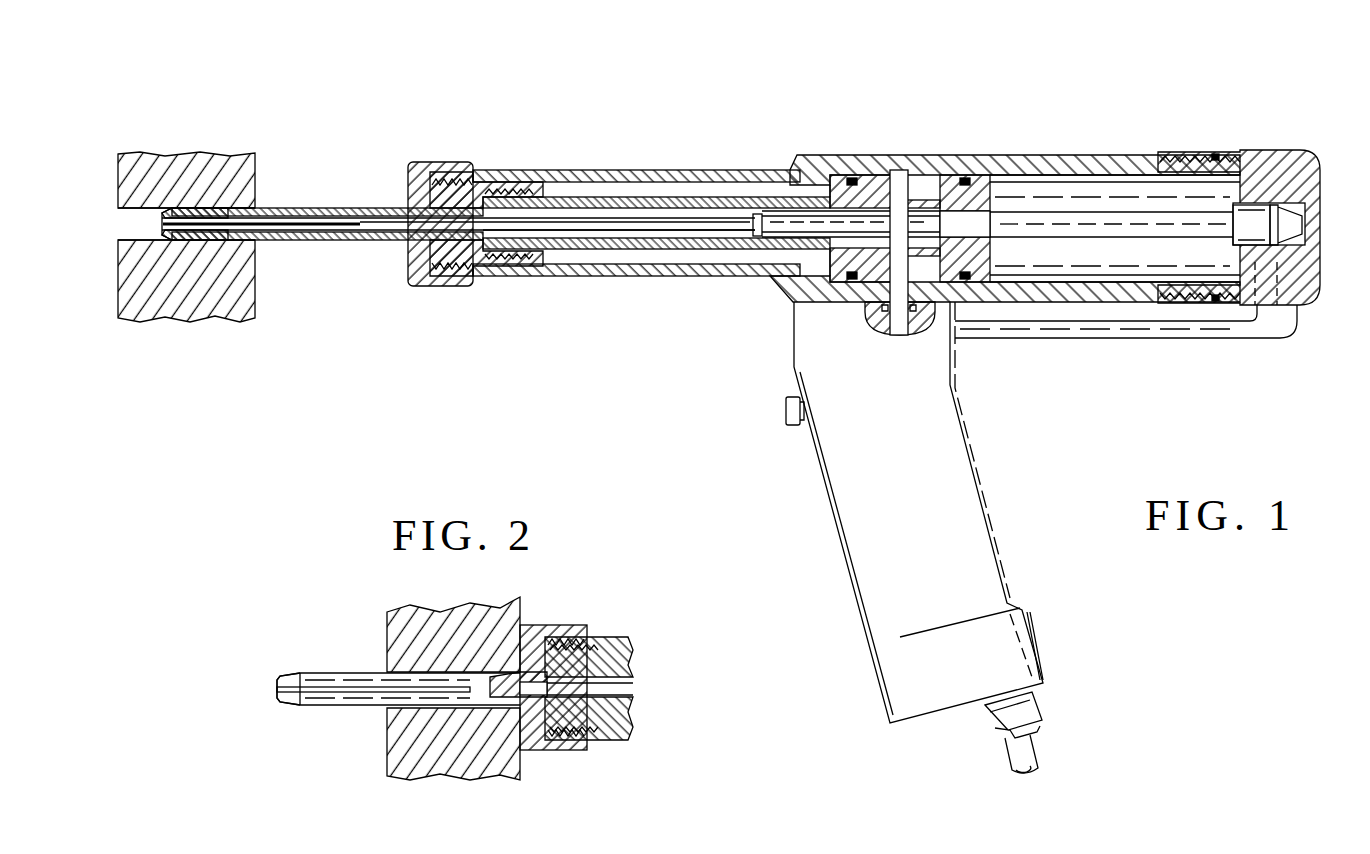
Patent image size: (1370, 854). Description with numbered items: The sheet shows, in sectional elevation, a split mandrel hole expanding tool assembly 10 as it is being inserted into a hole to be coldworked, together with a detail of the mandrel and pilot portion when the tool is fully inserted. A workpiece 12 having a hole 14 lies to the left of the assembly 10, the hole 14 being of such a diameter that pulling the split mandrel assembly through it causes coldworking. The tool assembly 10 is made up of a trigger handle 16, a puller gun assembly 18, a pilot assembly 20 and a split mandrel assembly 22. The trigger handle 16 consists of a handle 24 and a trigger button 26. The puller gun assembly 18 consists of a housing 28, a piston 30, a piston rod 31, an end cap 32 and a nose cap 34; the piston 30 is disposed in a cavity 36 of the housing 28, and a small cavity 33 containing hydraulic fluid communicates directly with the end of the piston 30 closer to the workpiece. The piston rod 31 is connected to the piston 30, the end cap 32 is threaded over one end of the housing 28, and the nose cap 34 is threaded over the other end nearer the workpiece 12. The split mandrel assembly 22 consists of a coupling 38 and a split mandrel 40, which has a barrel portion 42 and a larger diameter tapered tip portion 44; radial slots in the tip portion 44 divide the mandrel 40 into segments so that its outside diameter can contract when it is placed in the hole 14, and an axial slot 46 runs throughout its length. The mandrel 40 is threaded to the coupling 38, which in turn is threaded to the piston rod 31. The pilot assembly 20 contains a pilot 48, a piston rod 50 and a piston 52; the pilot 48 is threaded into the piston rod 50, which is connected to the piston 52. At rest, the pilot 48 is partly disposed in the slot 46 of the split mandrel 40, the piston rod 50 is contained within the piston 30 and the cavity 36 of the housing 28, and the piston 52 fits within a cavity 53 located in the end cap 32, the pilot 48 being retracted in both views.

In FIG. 1, the split mandrel hole expanding tool assembly 10 is at (643, 132).
In FIG. 1, the workpiece 12 is at (160, 162).
In FIG. 2, the workpiece 12 is at (397, 625).
In FIG. 1, the hole 14 is at (137, 232).
In FIG. 1, the trigger handle 16 is at (829, 529).
In FIG. 1, the puller gun assembly 18 is at (956, 128).
In FIG. 1, the pilot assembly 20 is at (693, 220).
In FIG. 1, the split mandrel assembly 22 is at (314, 178).
In FIG. 1, the handle 24 is at (958, 417).
In FIG. 1, the trigger button 26 is at (785, 417).
In FIG. 1, the housing 28 is at (857, 155).
In FIG. 1, the piston 30 is at (1012, 165).
In FIG. 1, the piston rod 31 is at (545, 200).
In FIG. 1, the end cap 32 is at (1242, 150).
In FIG. 1, the small cavity 33 is at (895, 312).
In FIG. 1, the nose cap 34 is at (424, 162).
In FIG. 2, the nose cap 34 is at (550, 642).
In FIG. 1, the cavity 36 is at (1118, 190).
In FIG. 1, the coupling 38 is at (488, 280).
In FIG. 2, the coupling 38 is at (603, 745).
In FIG. 1, the split mandrel 40 is at (182, 210).
In FIG. 2, the split mandrel 40 is at (297, 708).
In FIG. 1, the barrel portion 42 is at (333, 243).
In FIG. 1, the tapered tip portion 44 is at (183, 223).
In FIG. 1, the axial slot 46 is at (290, 233).
In FIG. 2, the axial slot 46 is at (360, 695).
In FIG. 1, the pilot 48 is at (628, 232).
In FIG. 2, the pilot 48 is at (537, 713).
In FIG. 1, the piston rod 50 is at (1087, 232).
In FIG. 1, the piston 52 is at (1263, 213).
In FIG. 1, the cavity 53 is at (1297, 240).